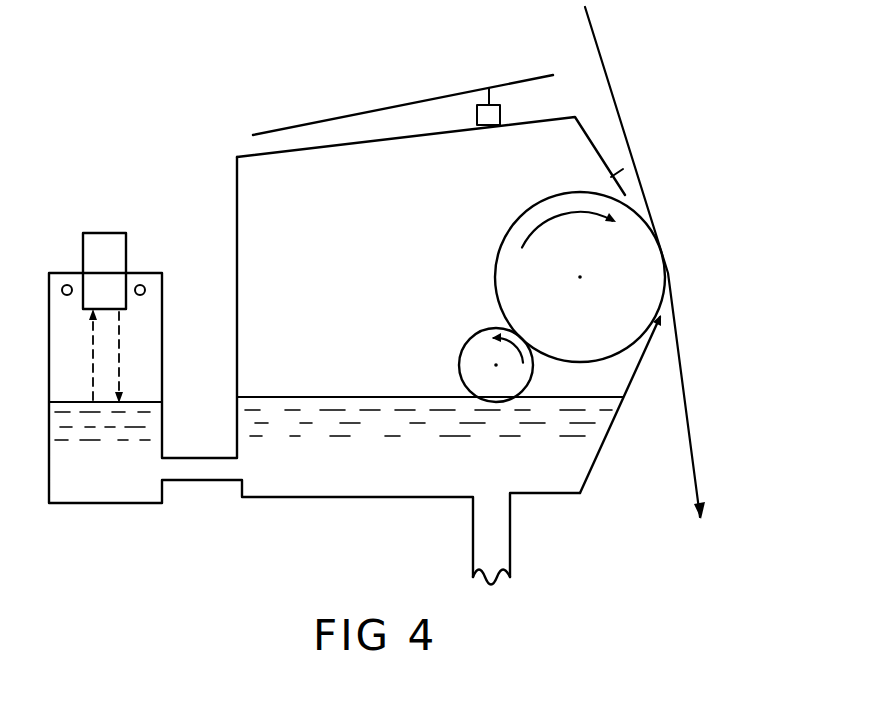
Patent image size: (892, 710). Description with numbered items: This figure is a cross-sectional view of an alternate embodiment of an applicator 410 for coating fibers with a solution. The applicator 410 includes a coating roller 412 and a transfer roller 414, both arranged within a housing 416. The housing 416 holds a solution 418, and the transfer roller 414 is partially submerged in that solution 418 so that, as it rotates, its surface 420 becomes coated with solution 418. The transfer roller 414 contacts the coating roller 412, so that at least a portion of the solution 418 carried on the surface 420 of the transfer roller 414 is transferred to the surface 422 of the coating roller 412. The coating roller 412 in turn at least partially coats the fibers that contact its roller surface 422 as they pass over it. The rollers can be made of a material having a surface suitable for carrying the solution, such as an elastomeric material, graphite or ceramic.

The applicator 410 is at (202, 165).
The coating roller 412 is at (513, 281).
The transfer roller 414 is at (470, 375).
The housing 416 is at (585, 504).
The solution 418 is at (297, 487).
The surface of transfer roller 420 is at (463, 347).
The surface of coating roller 422 is at (522, 222).